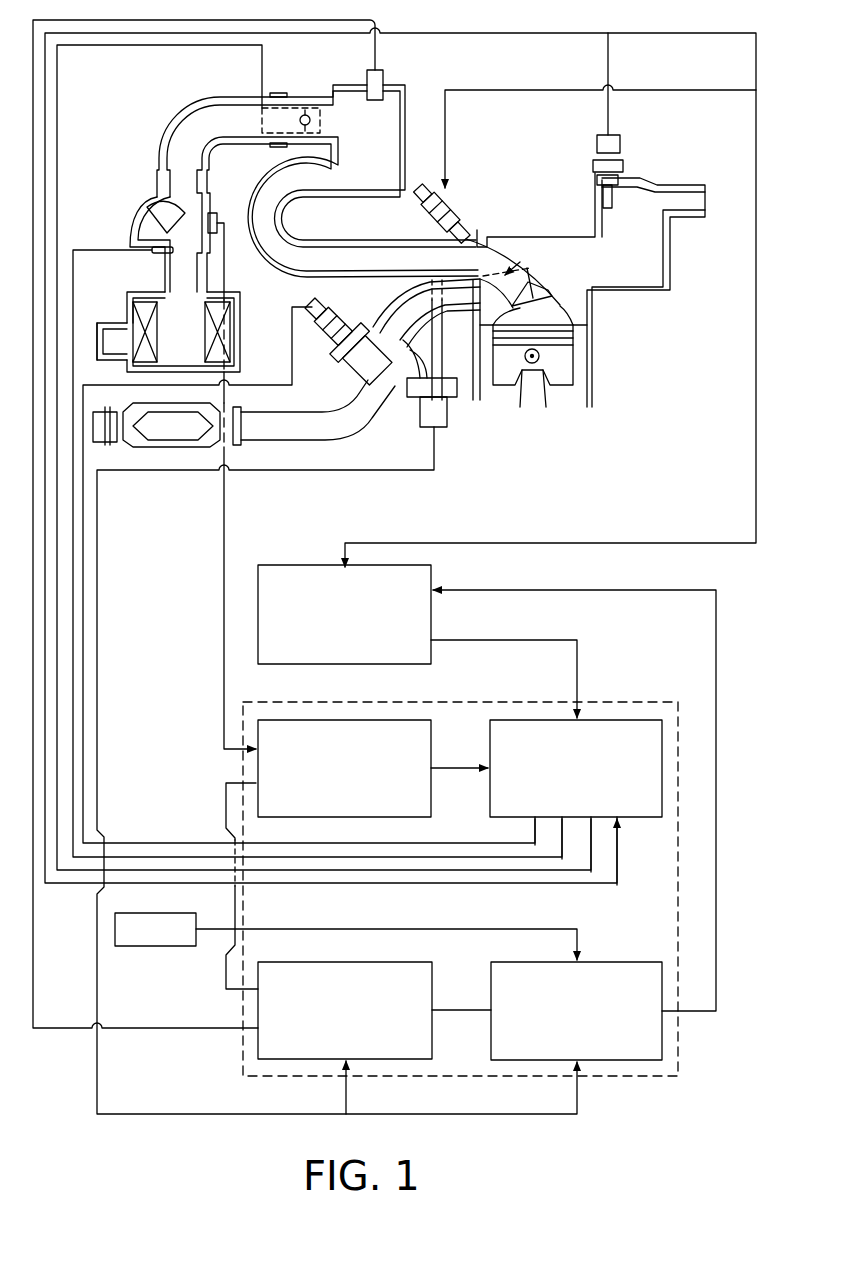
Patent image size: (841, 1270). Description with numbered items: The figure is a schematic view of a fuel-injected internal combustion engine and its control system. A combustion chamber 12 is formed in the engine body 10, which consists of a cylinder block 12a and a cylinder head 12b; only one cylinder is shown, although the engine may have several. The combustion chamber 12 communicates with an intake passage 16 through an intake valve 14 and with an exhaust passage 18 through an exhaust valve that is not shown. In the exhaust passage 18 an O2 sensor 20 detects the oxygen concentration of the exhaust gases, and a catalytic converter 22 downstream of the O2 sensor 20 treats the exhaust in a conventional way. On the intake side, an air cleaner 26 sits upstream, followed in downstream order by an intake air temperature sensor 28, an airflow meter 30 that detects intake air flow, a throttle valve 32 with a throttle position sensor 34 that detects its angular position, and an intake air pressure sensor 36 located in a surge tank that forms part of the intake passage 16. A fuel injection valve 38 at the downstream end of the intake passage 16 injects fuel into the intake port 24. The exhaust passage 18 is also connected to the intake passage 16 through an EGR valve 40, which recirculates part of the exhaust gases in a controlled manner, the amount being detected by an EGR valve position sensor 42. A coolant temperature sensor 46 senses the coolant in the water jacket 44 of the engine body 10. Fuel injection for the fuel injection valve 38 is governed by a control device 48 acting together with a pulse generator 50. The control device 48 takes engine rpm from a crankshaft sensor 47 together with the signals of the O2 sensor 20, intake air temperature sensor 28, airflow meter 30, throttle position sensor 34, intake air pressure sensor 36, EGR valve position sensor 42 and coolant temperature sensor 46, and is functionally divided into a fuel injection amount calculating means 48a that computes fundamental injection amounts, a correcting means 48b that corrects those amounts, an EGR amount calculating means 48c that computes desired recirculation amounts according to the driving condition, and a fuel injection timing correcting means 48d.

The engine body 10 is at (592, 385).
The combustion chamber 12 is at (571, 352).
The cylinder block 12a is at (575, 362).
The cylinder head 12b is at (572, 310).
The intake valve 14 is at (534, 296).
The intake passage 16 is at (330, 237).
The exhaust passage 18 is at (385, 308).
The O2 sensor 20 is at (332, 325).
The catalytic converter 22 is at (172, 447).
The intake port 24 is at (530, 262).
The air cleaner 26 is at (135, 310).
The intake air temperature sensor 28 is at (152, 253).
The airflow meter 30 is at (135, 212).
The throttle valve 32 is at (310, 120).
The throttle position sensor 34 is at (296, 100).
The intake air pressure sensor 36 is at (375, 78).
The fuel injection valve 38 is at (456, 210).
The EGR valve 40 is at (412, 406).
The EGR valve position sensor 42 is at (437, 415).
The water jacket 44 is at (655, 255).
The coolant temperature sensor 46 is at (620, 144).
The crankshaft sensor 47 is at (157, 946).
The control device 48 is at (678, 740).
The fuel injection amount calculating means 48a is at (420, 720).
The correcting means 48b is at (662, 783).
The EGR amount calculating means 48c is at (258, 1052).
The fuel injection timing correcting means 48d is at (662, 1030).
The pulse generator 50 is at (432, 622).